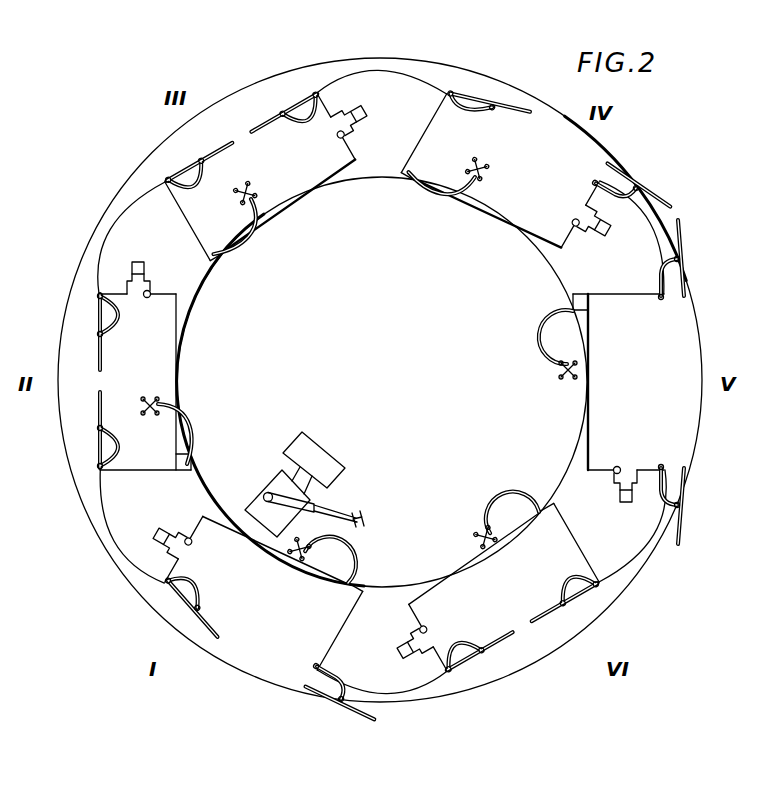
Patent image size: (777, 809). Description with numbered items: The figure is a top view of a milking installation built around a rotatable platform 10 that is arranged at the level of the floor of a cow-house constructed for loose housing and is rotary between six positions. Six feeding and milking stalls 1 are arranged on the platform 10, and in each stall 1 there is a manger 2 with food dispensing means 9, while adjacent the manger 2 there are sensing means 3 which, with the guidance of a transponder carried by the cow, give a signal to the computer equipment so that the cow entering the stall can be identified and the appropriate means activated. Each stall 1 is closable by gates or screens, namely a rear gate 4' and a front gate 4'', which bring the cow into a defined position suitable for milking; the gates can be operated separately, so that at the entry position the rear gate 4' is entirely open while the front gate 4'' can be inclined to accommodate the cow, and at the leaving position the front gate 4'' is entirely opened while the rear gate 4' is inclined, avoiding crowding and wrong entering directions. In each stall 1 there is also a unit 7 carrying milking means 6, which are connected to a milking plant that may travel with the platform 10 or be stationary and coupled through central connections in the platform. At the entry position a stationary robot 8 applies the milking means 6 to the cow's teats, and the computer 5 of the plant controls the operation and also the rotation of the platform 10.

The feeding and milking stall 1 is at (273, 138).
The manger 2 is at (342, 112).
The sensing means 3 is at (346, 136).
The rear gate 4' is at (391, 383).
The front gate 4'' is at (391, 381).
The computer 5 is at (330, 458).
The milking means 6 is at (260, 198).
The unit 7 is at (216, 260).
The stationary robot 8 is at (278, 480).
The food dispensing means 9 is at (381, 92).
The rotatable platform 10 is at (540, 648).